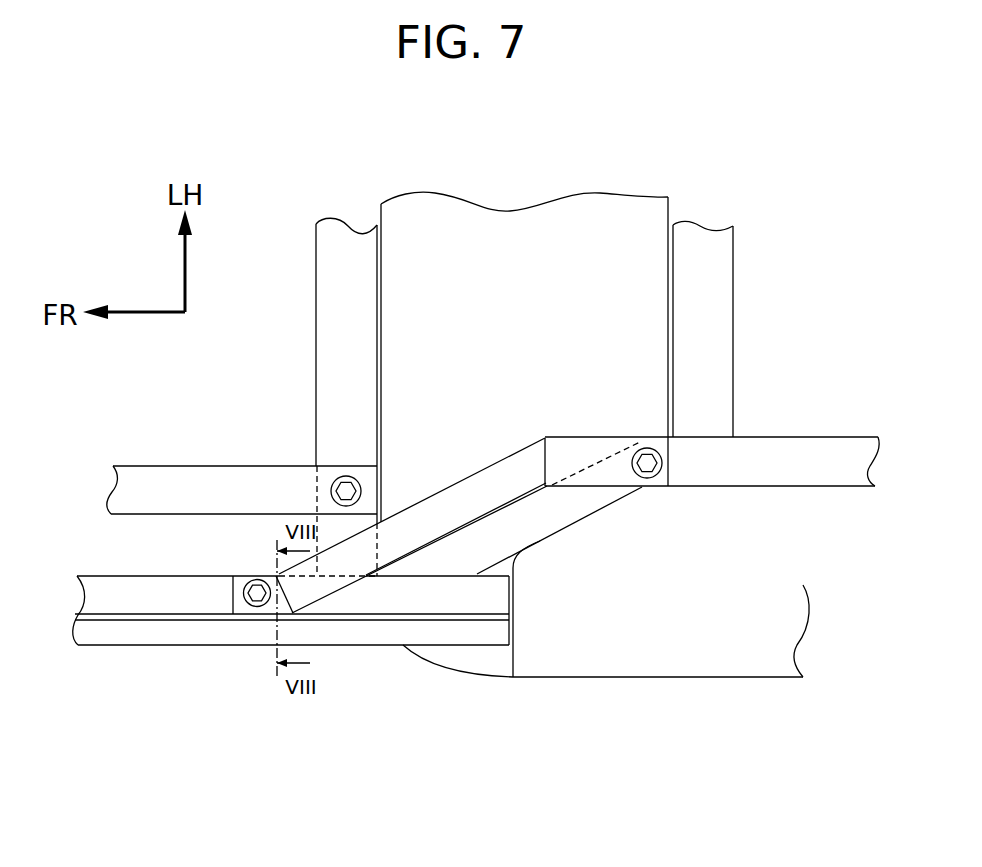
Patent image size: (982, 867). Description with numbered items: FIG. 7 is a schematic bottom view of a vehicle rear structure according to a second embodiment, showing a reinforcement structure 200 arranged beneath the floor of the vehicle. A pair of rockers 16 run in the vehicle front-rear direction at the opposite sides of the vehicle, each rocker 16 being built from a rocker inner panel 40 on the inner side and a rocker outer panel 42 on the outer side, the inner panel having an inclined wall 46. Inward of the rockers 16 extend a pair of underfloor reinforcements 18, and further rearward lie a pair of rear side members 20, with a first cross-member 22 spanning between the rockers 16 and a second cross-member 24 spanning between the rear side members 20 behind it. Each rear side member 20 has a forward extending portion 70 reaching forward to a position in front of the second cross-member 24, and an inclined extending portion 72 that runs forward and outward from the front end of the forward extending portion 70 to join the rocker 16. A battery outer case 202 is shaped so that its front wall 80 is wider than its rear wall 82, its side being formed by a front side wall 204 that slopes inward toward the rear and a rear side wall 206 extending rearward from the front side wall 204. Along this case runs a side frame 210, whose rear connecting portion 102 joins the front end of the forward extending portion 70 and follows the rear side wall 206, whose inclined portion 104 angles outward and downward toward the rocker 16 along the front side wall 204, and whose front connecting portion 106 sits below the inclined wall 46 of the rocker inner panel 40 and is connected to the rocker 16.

The rocker 16 is at (167, 648).
The underfloor reinforcement 18 is at (192, 487).
The rear side member 20 is at (835, 437).
The first cross-member 22 is at (333, 272).
The second cross-member 24 is at (715, 258).
The rocker inner panel 40 is at (95, 576).
The rocker outer panel 42 is at (92, 645).
The inclined wall 46 is at (162, 598).
The forward extending portion 70 is at (765, 468).
The inclined extending portion 72 is at (540, 525).
The front wall 80 is at (380, 340).
The rear wall 82 is at (670, 333).
The rear connecting portion 102 is at (577, 450).
The inclined portion 104 is at (512, 482).
The front connecting portion 106 is at (240, 608).
The reinforcement structure 200 is at (305, 210).
The battery outer case 202 is at (522, 250).
The front side wall 204 is at (437, 497).
The rear side wall 206 is at (600, 437).
The side frame 210 is at (458, 480).